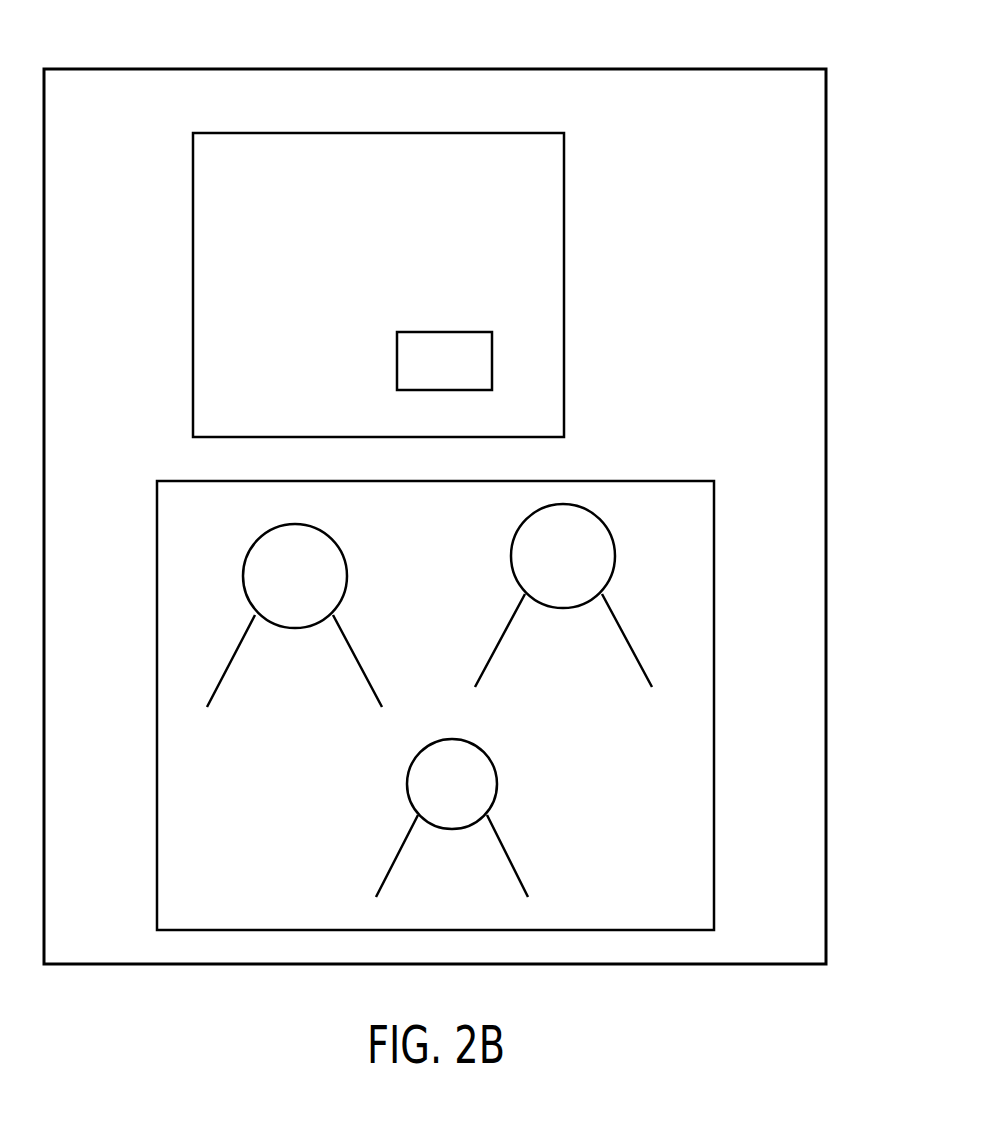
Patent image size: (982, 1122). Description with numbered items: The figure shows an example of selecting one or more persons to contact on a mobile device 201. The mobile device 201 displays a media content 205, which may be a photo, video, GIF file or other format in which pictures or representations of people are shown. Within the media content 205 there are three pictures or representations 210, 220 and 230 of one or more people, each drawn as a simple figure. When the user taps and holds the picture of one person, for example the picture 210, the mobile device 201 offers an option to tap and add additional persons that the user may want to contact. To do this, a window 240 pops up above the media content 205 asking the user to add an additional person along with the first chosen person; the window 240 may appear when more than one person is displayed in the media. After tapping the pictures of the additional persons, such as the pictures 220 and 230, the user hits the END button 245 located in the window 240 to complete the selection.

The mobile device 201 is at (146, 69).
The media content 205 is at (640, 481).
The picture 210 is at (347, 563).
The picture 220 is at (615, 552).
The picture 230 is at (497, 773).
The window 240 is at (565, 160).
The END button 245 is at (397, 352).